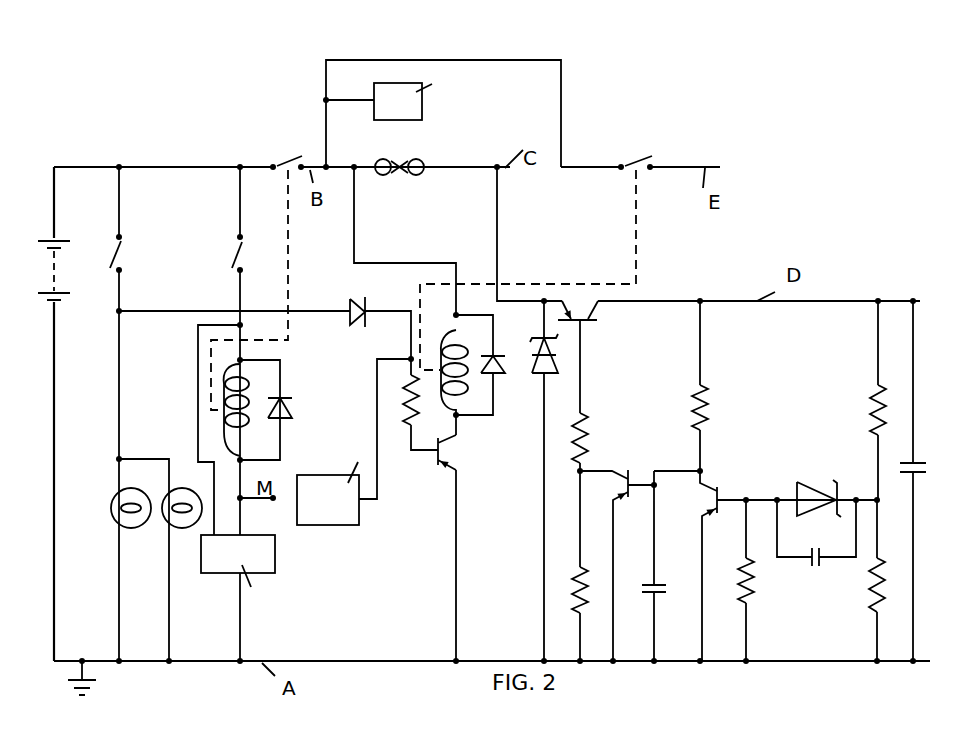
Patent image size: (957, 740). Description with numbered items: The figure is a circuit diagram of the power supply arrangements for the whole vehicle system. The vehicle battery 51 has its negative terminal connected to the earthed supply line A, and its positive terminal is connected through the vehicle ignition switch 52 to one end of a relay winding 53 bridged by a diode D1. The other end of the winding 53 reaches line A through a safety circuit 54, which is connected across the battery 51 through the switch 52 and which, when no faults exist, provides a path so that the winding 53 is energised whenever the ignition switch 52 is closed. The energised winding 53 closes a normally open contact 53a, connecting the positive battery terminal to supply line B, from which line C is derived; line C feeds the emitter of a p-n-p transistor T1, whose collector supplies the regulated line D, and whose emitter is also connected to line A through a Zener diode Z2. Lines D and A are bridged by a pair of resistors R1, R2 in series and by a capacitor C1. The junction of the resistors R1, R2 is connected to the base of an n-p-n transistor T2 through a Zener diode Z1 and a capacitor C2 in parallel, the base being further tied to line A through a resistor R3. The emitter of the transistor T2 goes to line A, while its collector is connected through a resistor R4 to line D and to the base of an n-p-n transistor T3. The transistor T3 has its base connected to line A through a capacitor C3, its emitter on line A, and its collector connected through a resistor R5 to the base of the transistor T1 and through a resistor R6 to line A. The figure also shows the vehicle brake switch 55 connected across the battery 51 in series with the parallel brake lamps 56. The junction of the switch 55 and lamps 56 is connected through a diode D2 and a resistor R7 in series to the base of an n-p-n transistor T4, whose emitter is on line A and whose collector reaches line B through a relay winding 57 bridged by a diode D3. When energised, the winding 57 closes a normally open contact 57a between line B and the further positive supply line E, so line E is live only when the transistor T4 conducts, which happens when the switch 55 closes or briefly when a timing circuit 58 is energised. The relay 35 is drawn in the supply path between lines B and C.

The vehicle battery 51 is at (44, 283).
The vehicle ignition switch 52 is at (233, 253).
The relay winding 53 is at (228, 342).
The normally open contact 53a is at (292, 157).
The safety circuit 54 is at (262, 557).
The vehicle brake switch 55 is at (120, 253).
The brake lamps 56 is at (118, 493).
The relay winding 57 is at (443, 339).
The normally open contact 57a is at (652, 136).
The timing circuit 58 is at (337, 517).
The relay 35 is at (412, 103).
The diode D1 is at (284, 403).
The diode D2 is at (365, 297).
The diode D3 is at (500, 370).
The Zener diode Z1 is at (835, 487).
The Zener diode Z2 is at (550, 345).
The p-n-p transistor T1 is at (584, 307).
The n-p-n transistor T2 is at (696, 491).
The n-p-n transistor T3 is at (606, 479).
The n-p-n transistor T4 is at (452, 459).
The resistor R1 is at (870, 406).
The resistor R2 is at (887, 588).
The resistor R3 is at (753, 589).
The resistor R4 is at (706, 394).
The resistor R5 is at (589, 437).
The resistor R6 is at (571, 591).
The resistor R7 is at (401, 404).
The capacitor C1 is at (917, 462).
The capacitor C2 is at (818, 562).
The capacitor C3 is at (660, 596).